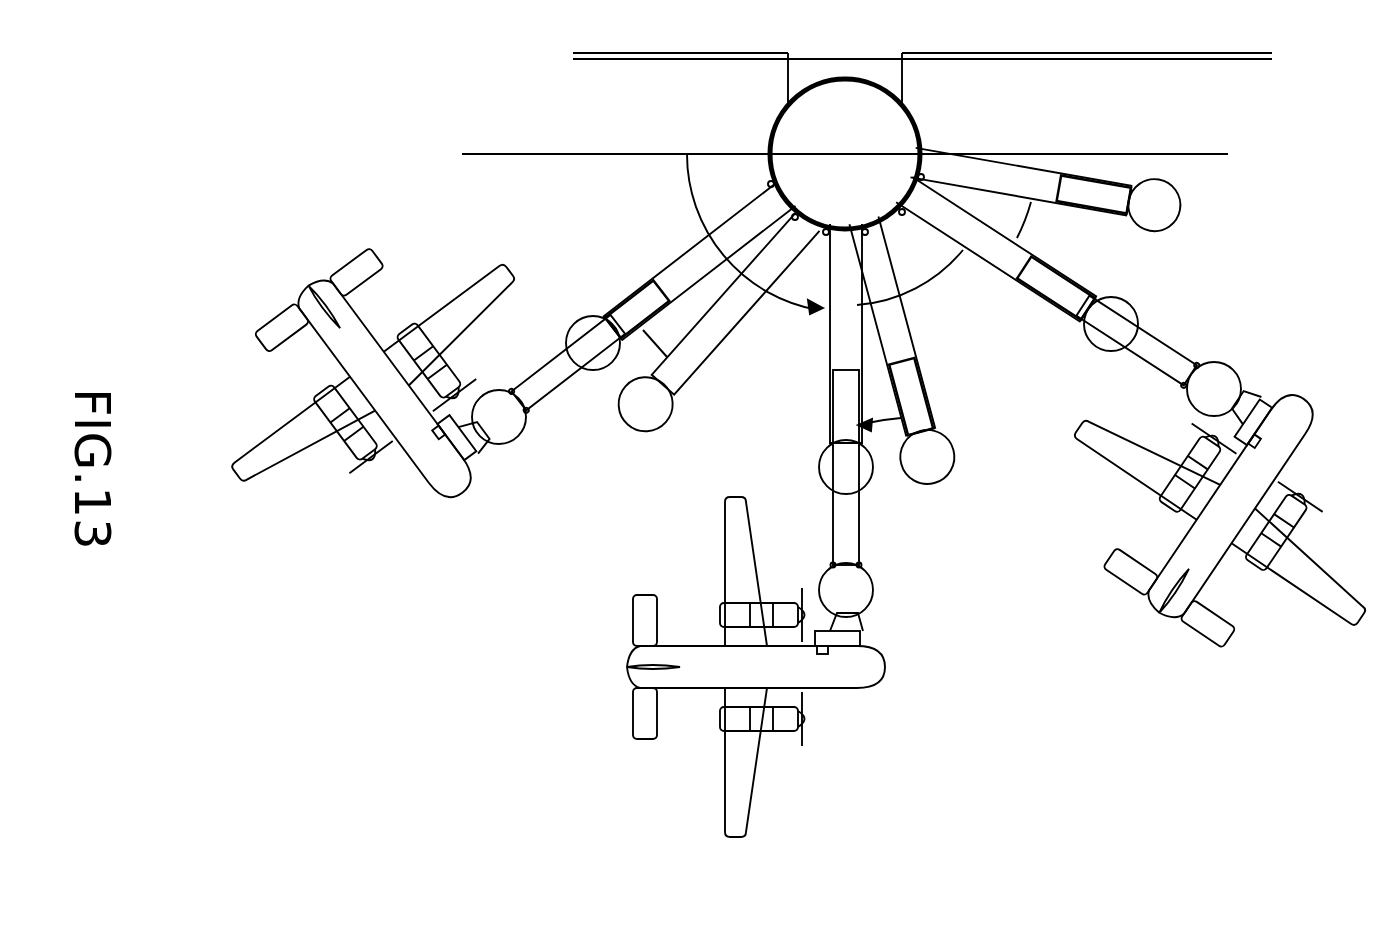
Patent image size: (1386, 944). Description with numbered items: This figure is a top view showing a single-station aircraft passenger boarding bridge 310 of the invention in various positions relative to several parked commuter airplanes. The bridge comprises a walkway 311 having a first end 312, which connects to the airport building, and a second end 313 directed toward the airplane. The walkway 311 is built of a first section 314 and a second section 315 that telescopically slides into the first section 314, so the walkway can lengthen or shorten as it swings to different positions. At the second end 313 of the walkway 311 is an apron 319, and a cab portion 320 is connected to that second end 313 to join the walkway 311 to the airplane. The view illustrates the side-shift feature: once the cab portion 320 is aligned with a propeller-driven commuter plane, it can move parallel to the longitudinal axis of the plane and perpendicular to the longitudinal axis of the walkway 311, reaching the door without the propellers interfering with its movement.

The aircraft passenger boarding bridge 310 is at (1029, 303).
The walkway 311 is at (640, 303).
The first end 312 is at (913, 187).
The second end 313 is at (1263, 387).
The first section 314 is at (847, 335).
The second section 315 is at (1172, 363).
The apron 319 is at (855, 623).
The cab portion 320 is at (863, 642).